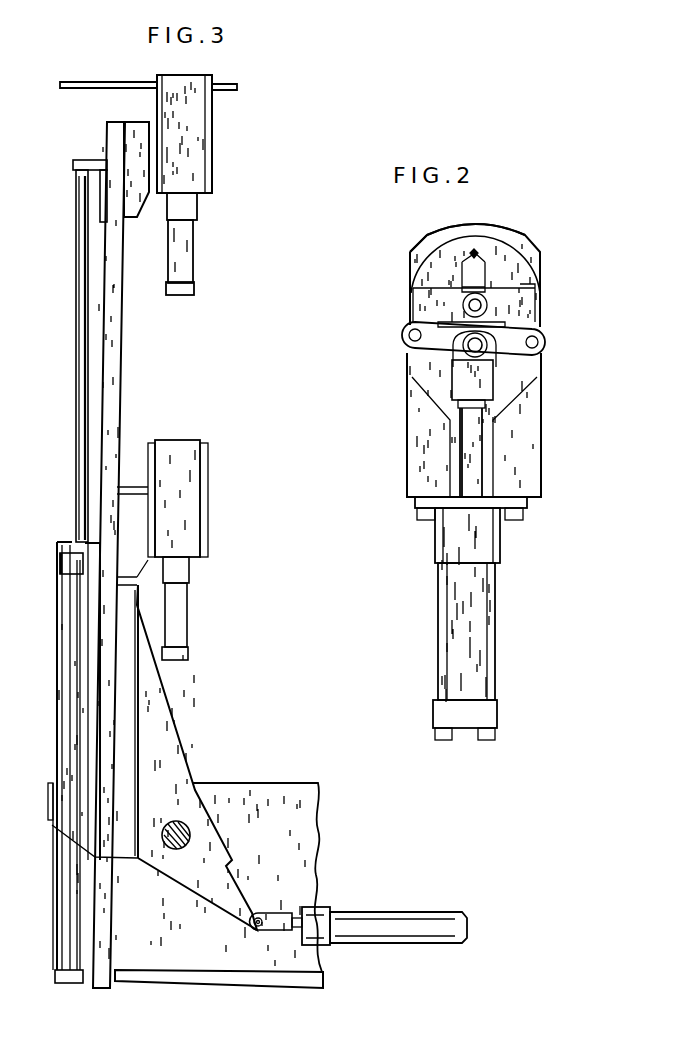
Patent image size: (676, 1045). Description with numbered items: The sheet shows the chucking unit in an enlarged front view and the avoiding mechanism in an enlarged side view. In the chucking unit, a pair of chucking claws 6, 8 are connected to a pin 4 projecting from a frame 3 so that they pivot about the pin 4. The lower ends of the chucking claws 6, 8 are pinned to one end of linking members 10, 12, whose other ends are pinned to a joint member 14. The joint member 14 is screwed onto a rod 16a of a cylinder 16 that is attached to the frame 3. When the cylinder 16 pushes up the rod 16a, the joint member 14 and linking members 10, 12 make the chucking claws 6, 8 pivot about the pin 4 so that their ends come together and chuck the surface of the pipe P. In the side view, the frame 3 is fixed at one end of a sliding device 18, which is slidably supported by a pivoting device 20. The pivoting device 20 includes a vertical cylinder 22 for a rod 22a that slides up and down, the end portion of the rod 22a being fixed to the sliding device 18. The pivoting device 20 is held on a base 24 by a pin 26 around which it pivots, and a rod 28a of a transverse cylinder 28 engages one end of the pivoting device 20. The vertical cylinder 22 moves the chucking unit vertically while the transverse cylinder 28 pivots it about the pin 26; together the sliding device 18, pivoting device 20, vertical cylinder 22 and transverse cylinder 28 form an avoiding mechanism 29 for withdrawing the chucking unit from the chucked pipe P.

In FIG. 3, the pipe P is at (237, 85).
In FIG. 2, the pipe P is at (476, 252).
In FIG. 3, the frame 3 is at (138, 132).
In FIG. 2, the frame 3 is at (413, 370).
In FIG. 2, the pin 4 is at (477, 304).
In FIG. 2, the chucking claw 6 is at (422, 262).
In FIG. 2, the chucking claw 8 is at (497, 272).
In FIG. 2, the linking member 10 is at (460, 360).
In FIG. 2, the linking member 12 is at (507, 358).
In FIG. 2, the joint member 14 is at (477, 375).
In FIG. 3, the cylinder 16 is at (185, 257).
In FIG. 2, the cylinder 16 is at (467, 622).
In FIG. 2, the rod 16a is at (467, 463).
In FIG. 3, the sliding device 18 is at (108, 377).
In FIG. 3, the pivoting device 20 is at (155, 720).
In FIG. 3, the vertical cylinder 22 is at (75, 665).
In FIG. 3, the rod 22a is at (77, 336).
In FIG. 3, the base 24 is at (193, 942).
In FIG. 3, the pin 26 is at (188, 827).
In FIG. 3, the transverse cylinder 28 is at (413, 928).
In FIG. 3, the rod 28a is at (302, 907).
In FIG. 3, the avoiding mechanism 29 is at (203, 685).